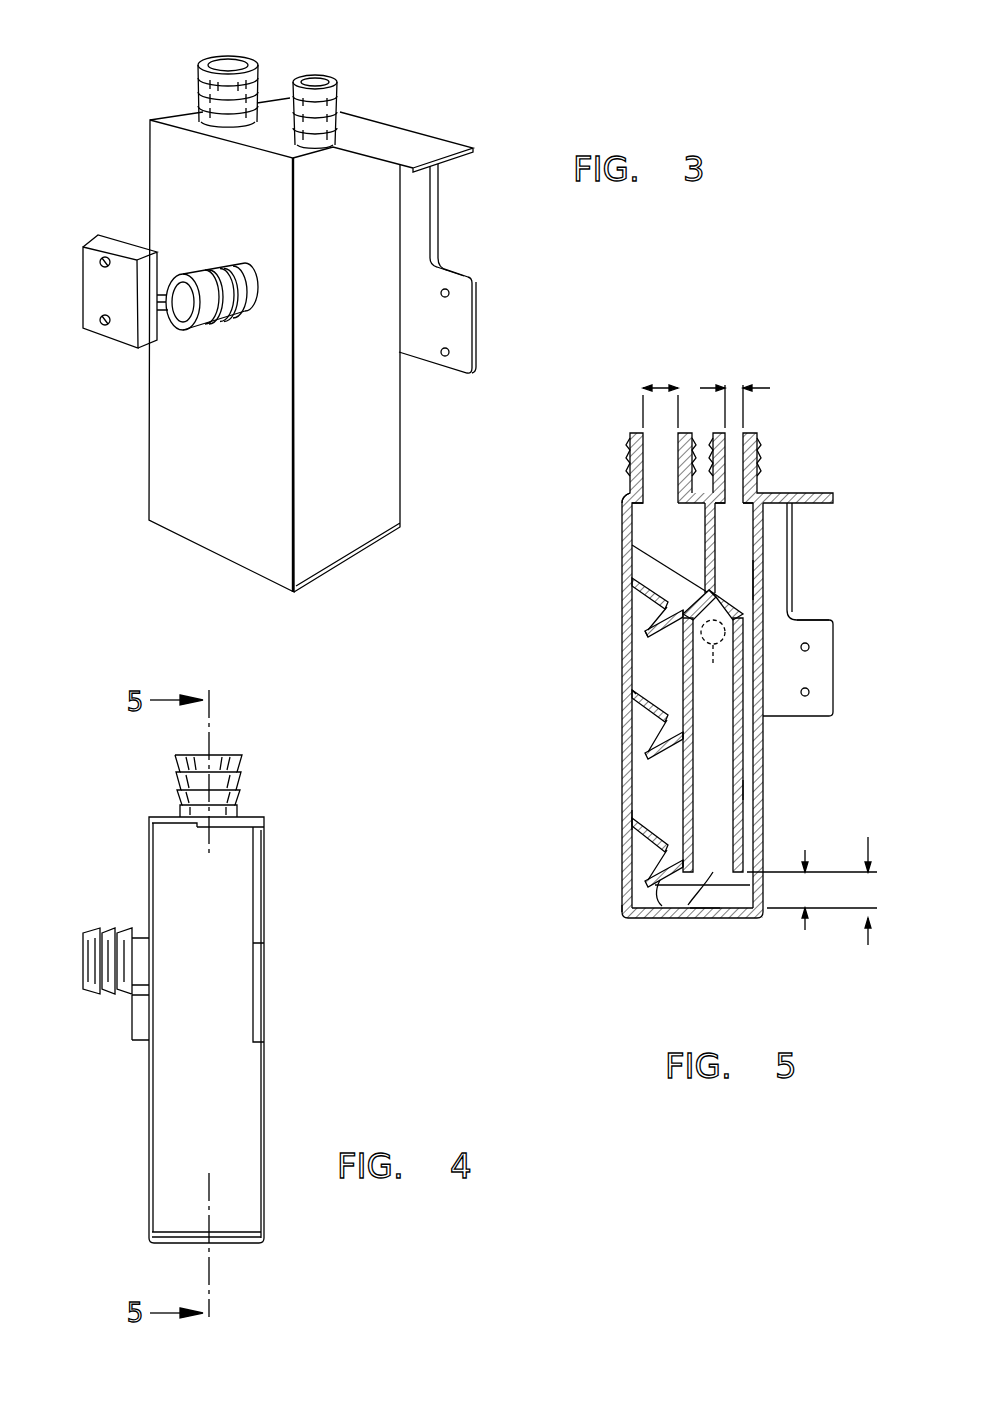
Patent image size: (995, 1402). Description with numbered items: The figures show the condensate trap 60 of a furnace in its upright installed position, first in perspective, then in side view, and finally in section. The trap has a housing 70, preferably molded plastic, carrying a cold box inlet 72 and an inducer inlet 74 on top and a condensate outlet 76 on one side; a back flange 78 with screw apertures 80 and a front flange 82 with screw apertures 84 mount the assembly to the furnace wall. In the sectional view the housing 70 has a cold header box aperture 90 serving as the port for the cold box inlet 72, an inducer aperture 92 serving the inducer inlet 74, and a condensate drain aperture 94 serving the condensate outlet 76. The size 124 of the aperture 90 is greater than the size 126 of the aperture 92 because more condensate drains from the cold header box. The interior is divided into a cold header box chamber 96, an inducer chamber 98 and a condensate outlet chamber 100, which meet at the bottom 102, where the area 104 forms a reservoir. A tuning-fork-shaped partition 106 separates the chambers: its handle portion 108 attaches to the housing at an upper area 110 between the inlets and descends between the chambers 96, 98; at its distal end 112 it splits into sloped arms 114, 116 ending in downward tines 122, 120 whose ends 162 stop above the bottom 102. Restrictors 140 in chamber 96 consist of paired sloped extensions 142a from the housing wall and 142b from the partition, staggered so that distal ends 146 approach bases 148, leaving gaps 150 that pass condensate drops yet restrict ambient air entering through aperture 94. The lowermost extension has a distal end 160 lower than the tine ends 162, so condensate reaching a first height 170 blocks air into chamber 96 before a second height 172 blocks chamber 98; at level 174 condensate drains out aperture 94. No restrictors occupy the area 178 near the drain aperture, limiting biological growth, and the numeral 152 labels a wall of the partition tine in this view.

In FIG. 3, the condensate trap 60 is at (86, 171).
In FIG. 4, the condensate trap 60 is at (301, 890).
In FIG. 5, the condensate trap 60 is at (871, 536).
In FIG. 3, the housing 70 is at (198, 478).
In FIG. 4, the housing 70 is at (196, 1141).
In FIG. 5, the housing 70 is at (628, 810).
In FIG. 3, the cold box inlet 72 is at (231, 57).
In FIG. 4, the cold box inlet 72 is at (181, 812).
In FIG. 5, the cold box inlet 72 is at (631, 438).
In FIG. 3, the inducer inlet 74 is at (322, 77).
In FIG. 4, the inducer inlet 74 is at (238, 812).
In FIG. 5, the inducer inlet 74 is at (757, 440).
In FIG. 3, the condensate outlet 76 is at (176, 273).
In FIG. 4, the condensate outlet 76 is at (105, 928).
In FIG. 3, the back flange 78 is at (448, 268).
In FIG. 4, the back flange 78 is at (264, 957).
In FIG. 5, the back flange 78 is at (817, 632).
In FIG. 3, the screw apertures 80 is at (449, 297).
In FIG. 3, the front flange 82 is at (88, 250).
In FIG. 4, the front flange 82 is at (131, 1015).
In FIG. 3, the screw apertures 84 is at (102, 318).
In FIG. 5, the cold header box aperture 90 is at (655, 478).
In FIG. 5, the inducer aperture 92 is at (757, 478).
In FIG. 5, the condensate drain aperture 94 is at (712, 655).
In FIG. 5, the cold header box chamber 96 is at (659, 546).
In FIG. 5, the inducer chamber 98 is at (723, 546).
In FIG. 5, the condensate outlet chamber 100 is at (715, 705).
In FIG. 5, the bottom 102 is at (632, 920).
In FIG. 5, the area 104 is at (700, 917).
In FIG. 5, the partition 106 is at (757, 575).
In FIG. 5, the handle portion 108 is at (620, 504).
In FIG. 5, the upper area 110 is at (703, 495).
In FIG. 5, the distal end 112 is at (632, 545).
In FIG. 5, the sloped arm 114 is at (650, 628).
In FIG. 5, the sloped arm 116 is at (742, 605).
In FIG. 5, the elongated tine 120 is at (753, 790).
In FIG. 5, the elongated tine 122 is at (626, 823).
In FIG. 5, the size 124 is at (664, 388).
In FIG. 5, the size 126 is at (733, 388).
In FIG. 5, the restrictors 140 is at (633, 695).
In FIG. 5, the sloped extensions 142a is at (625, 562).
In FIG. 5, the sloped extensions 142b is at (645, 637).
In FIG. 5, the distal ends 146 is at (668, 602).
In FIG. 5, the base 148 is at (753, 613).
In FIG. 5, the gaps 150 is at (683, 613).
In FIG. 5, the tube wall 152 is at (750, 670).
In FIG. 5, the distal end 160 is at (637, 882).
In FIG. 5, the ends 162 is at (735, 920).
In FIG. 5, the first height 170 is at (812, 890).
In FIG. 5, the second height 172 is at (870, 891).
In FIG. 5, the level 174 is at (809, 647).
In FIG. 5, the area 178 is at (637, 693).